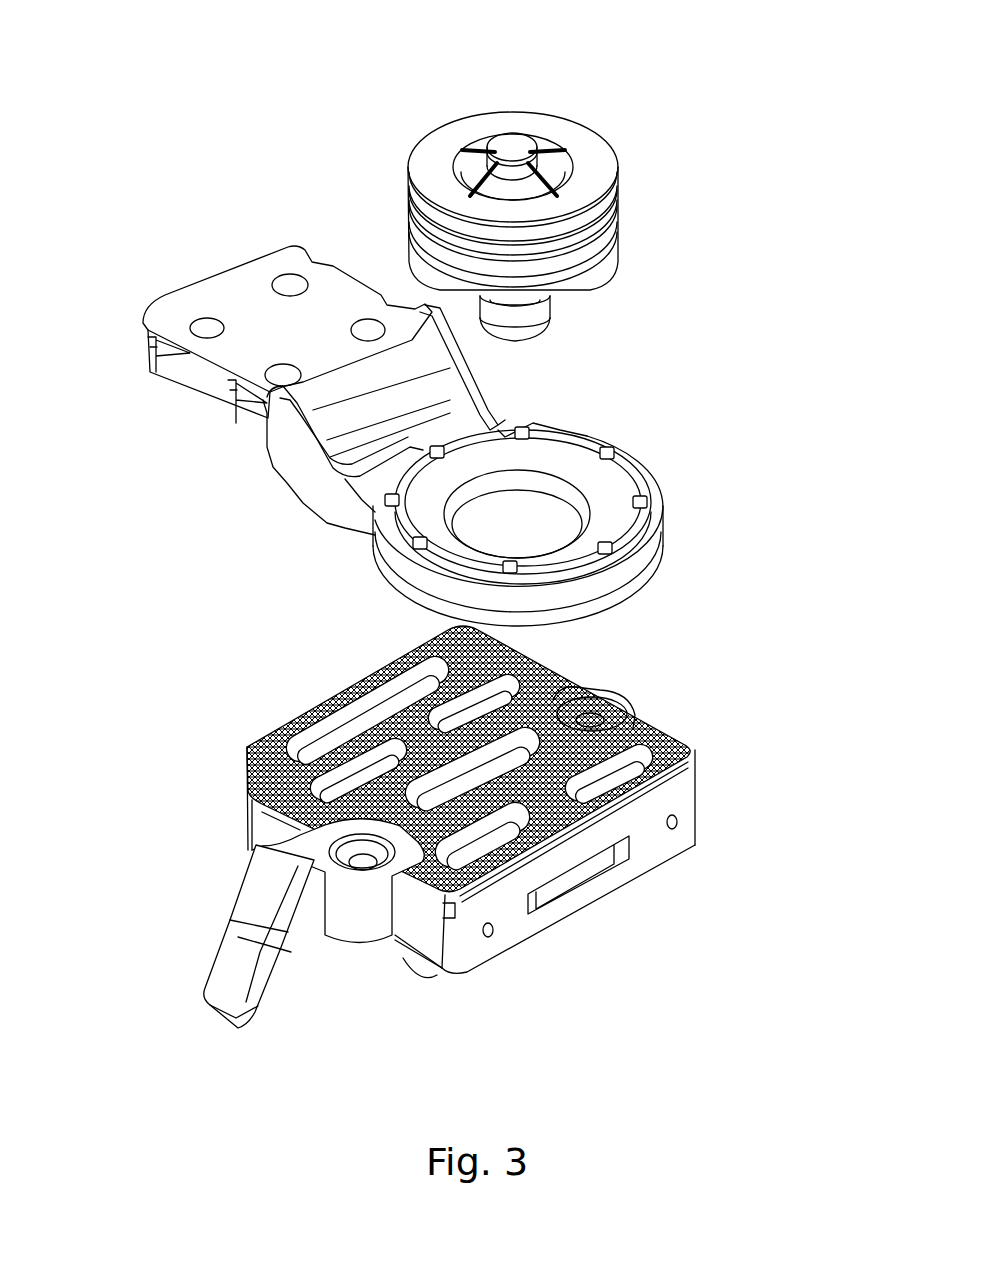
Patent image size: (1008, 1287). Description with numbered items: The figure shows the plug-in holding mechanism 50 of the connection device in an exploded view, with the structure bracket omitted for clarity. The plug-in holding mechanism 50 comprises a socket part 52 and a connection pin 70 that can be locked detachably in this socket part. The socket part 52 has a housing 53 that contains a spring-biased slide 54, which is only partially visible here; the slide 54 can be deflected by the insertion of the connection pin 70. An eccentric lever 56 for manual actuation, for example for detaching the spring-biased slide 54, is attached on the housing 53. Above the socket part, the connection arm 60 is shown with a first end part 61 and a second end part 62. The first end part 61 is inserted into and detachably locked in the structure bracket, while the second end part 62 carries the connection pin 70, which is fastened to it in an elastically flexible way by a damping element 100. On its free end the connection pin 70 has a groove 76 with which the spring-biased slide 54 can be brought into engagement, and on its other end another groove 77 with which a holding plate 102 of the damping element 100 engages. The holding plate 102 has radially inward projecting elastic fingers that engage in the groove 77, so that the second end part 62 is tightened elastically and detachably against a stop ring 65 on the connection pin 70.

The damping element 100 is at (662, 188).
The holding plate 102 is at (582, 143).
The connection pin 70 is at (508, 147).
The groove 77 is at (462, 145).
The stop ring 65 is at (607, 259).
The groove 76 is at (547, 307).
The connection arm 60 is at (183, 250).
The first end part 61 is at (277, 336).
The second end part 62 is at (663, 547).
The plug-in holding mechanism 50 is at (283, 675).
The socket part 52 is at (718, 738).
The housing 53 is at (652, 840).
The spring-biased slide 54 is at (540, 907).
The eccentric lever 56 is at (233, 960).